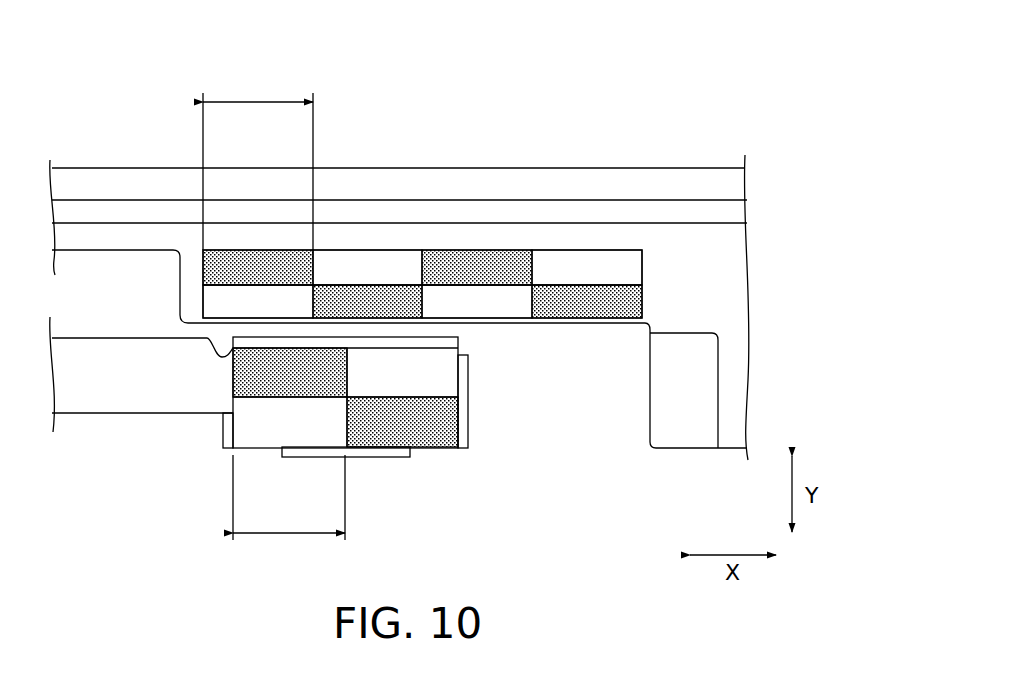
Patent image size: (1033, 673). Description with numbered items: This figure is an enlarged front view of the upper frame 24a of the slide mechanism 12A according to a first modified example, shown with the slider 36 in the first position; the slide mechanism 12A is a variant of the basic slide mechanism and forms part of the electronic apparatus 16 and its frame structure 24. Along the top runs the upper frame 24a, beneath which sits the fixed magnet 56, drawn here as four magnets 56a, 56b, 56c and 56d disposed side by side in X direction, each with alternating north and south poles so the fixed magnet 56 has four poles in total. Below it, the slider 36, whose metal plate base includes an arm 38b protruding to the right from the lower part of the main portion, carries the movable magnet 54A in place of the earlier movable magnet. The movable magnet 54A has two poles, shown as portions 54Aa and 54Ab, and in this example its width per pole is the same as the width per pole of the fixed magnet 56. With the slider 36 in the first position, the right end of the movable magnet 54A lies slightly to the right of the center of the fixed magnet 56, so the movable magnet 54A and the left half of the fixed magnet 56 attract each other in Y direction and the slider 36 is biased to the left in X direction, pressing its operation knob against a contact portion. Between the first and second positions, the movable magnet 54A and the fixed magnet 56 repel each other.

The slide mechanism 12A is at (134, 130).
The moving body (slider) 16 is at (648, 70).
The base plate 24 is at (695, 176).
The upper frame 24a is at (399, 195).
The slider 36 is at (85, 392).
The arm 38b is at (157, 392).
The movable magnet 54A is at (385, 452).
The mover magnet unit first portion 54Aa is at (243, 428).
The mover magnet unit second portion 54Ab is at (442, 445).
The fixed magnet 56 is at (444, 252).
The magnet 56a is at (285, 258).
The magnet 56b is at (402, 263).
The magnet 56c is at (503, 260).
The magnet 56d is at (608, 262).